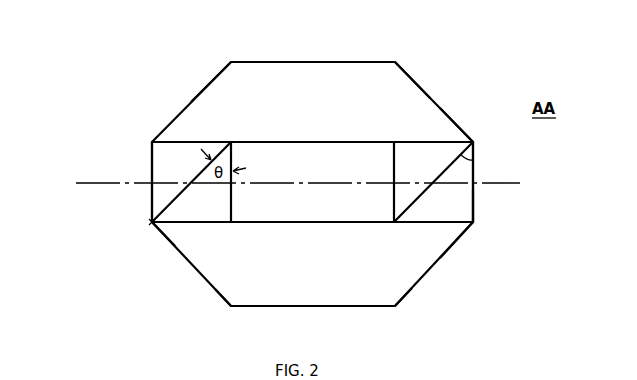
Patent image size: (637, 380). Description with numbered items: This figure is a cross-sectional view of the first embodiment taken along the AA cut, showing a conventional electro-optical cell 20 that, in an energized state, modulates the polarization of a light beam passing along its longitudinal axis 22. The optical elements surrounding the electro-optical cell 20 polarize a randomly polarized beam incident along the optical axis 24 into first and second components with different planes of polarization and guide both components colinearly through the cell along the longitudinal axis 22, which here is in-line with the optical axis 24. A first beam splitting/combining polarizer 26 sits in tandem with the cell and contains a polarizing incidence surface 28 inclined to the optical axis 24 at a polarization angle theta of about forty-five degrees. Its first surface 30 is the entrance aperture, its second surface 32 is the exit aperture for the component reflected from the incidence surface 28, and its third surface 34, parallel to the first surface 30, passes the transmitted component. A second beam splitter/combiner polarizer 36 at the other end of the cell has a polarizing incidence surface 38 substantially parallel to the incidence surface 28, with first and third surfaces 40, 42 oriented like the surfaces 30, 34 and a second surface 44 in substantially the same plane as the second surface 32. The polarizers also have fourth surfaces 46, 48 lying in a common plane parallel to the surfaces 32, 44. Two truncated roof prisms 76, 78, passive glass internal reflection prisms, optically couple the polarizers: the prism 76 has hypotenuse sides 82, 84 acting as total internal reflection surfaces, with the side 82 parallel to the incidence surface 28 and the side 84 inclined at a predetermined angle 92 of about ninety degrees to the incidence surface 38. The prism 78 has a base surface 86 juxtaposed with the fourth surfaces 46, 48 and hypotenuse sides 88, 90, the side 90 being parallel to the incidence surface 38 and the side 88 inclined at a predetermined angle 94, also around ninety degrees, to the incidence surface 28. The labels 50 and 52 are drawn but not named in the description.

The electro-optical cell 20 is at (348, 206).
The longitudinal axis 22 is at (297, 180).
The optical axis 24 is at (93, 178).
The first beam splitting/combining polarizer 26 is at (200, 224).
The polarizing incidence surface 28 is at (173, 199).
The first surface 30 is at (152, 148).
The second surface 32 is at (183, 146).
The third surface 34 is at (230, 207).
The second beam splitter/combiner polarizer 36 is at (458, 238).
The polarizing incidence surface 38 is at (475, 157).
The first surface 40 is at (395, 163).
The third surface 42 is at (474, 205).
The second surface 44 is at (432, 145).
The fourth surface 46 is at (150, 226).
The fourth surface 48 is at (424, 222).
The upper edge of central section 50 is at (348, 144).
The lower edge of central section 52 is at (357, 222).
The truncated roof prism 76 is at (330, 97).
The truncated roof prism 78 is at (337, 294).
The hypotenuse side 82 is at (207, 89).
The hypotenuse side 84 is at (411, 81).
The base surface 86 is at (290, 224).
The hypotenuse side 88 is at (222, 298).
The hypotenuse side 90 is at (404, 294).
The predetermined angle 92 is at (462, 132).
The predetermined angle 94 is at (164, 234).